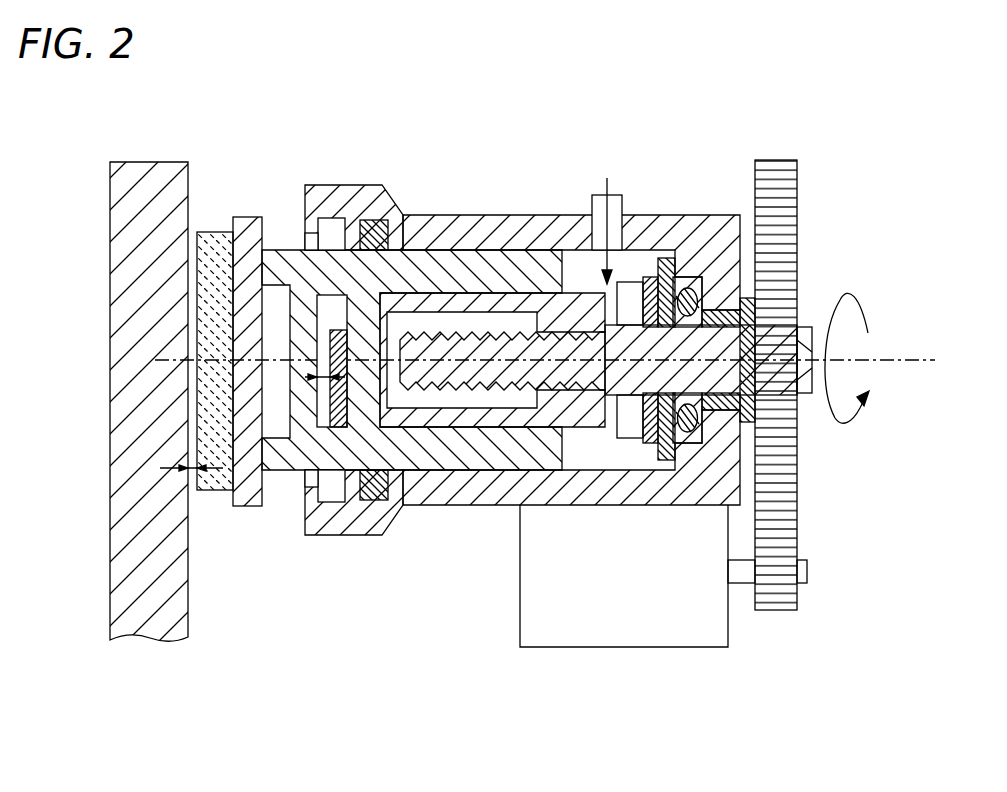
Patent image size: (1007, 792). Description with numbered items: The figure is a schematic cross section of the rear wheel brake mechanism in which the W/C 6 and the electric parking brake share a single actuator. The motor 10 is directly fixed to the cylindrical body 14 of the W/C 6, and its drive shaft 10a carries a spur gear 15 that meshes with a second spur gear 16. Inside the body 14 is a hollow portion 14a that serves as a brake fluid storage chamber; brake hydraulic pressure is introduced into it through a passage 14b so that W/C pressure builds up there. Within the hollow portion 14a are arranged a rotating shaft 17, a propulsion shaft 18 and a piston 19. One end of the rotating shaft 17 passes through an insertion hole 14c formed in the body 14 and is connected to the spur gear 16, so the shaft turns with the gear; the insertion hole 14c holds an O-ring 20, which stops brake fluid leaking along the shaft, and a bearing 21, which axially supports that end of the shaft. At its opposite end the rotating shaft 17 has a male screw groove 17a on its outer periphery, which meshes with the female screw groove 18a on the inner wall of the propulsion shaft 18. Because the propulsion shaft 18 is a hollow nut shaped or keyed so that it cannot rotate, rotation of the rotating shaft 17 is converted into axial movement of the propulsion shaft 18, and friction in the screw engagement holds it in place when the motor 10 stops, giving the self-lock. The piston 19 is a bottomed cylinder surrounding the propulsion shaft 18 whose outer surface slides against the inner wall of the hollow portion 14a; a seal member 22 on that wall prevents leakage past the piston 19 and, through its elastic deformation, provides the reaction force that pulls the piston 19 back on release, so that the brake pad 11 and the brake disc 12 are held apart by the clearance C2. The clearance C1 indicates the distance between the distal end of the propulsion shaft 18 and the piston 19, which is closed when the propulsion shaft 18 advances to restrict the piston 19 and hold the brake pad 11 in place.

The W/C 6 is at (551, 411).
The motor 10 is at (595, 647).
The drive shaft 10a is at (740, 578).
The brake pad 11 is at (220, 490).
The brake disc 12 is at (110, 470).
The body 14 is at (530, 215).
The hollow portion 14a is at (578, 262).
The passage 14b is at (612, 218).
The insertion hole 14c is at (748, 300).
The spur gear 15 is at (800, 598).
The spur gear 16 is at (797, 201).
The rotating shaft 17 is at (629, 425).
The male screw groove 17a is at (498, 392).
The propulsion shaft 18 is at (452, 427).
The female screw groove 18a is at (582, 410).
The piston 19 is at (412, 458).
The O-ring 20 is at (688, 445).
The bearing 21 is at (706, 462).
The seal member 22 is at (372, 505).
The clearance C1 is at (322, 378).
The clearance C2 is at (190, 477).